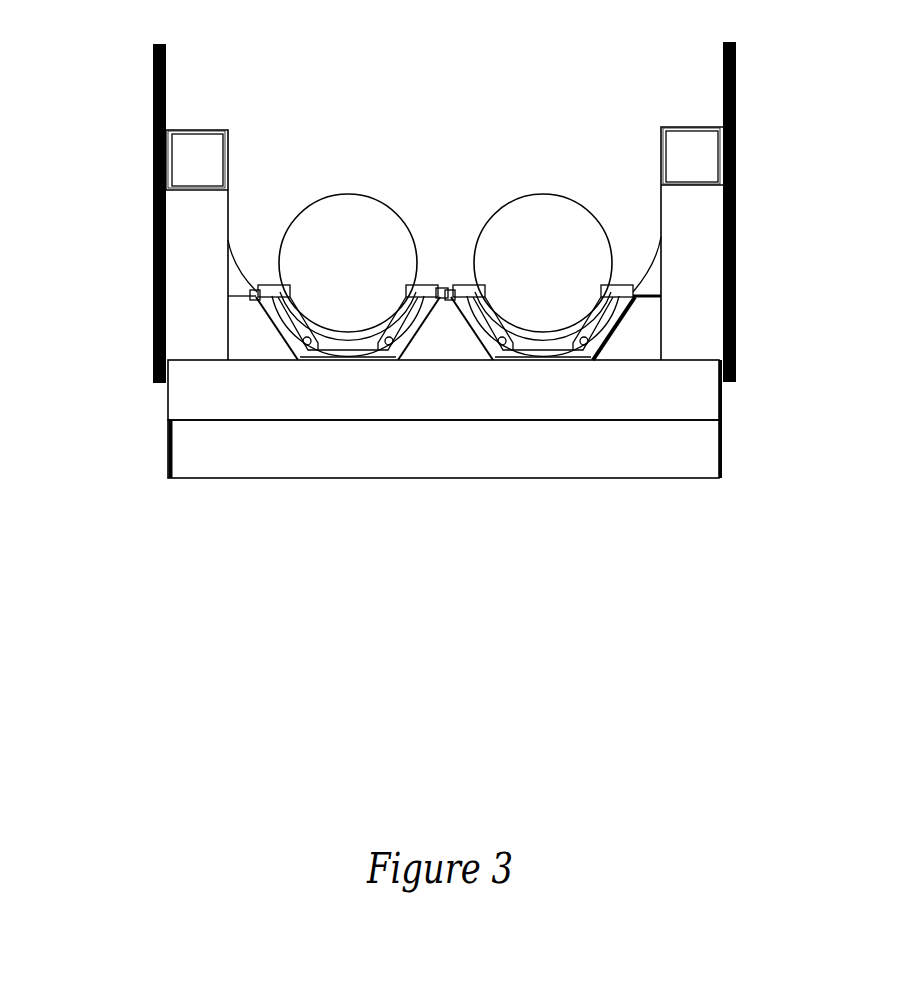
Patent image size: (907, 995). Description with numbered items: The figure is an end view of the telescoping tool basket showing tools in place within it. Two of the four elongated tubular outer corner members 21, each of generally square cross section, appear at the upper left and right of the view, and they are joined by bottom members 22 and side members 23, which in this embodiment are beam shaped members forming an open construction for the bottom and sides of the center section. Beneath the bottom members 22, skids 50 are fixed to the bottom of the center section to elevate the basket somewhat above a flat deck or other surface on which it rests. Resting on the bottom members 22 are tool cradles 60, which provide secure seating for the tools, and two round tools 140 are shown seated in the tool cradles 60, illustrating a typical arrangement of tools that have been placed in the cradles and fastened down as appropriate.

The outer corner member 21 is at (187, 177).
The bottom member 22 is at (708, 396).
The side member 23 is at (688, 283).
The skid 50 is at (247, 447).
The tool cradle 60 is at (272, 335).
The tool 140 is at (345, 218).